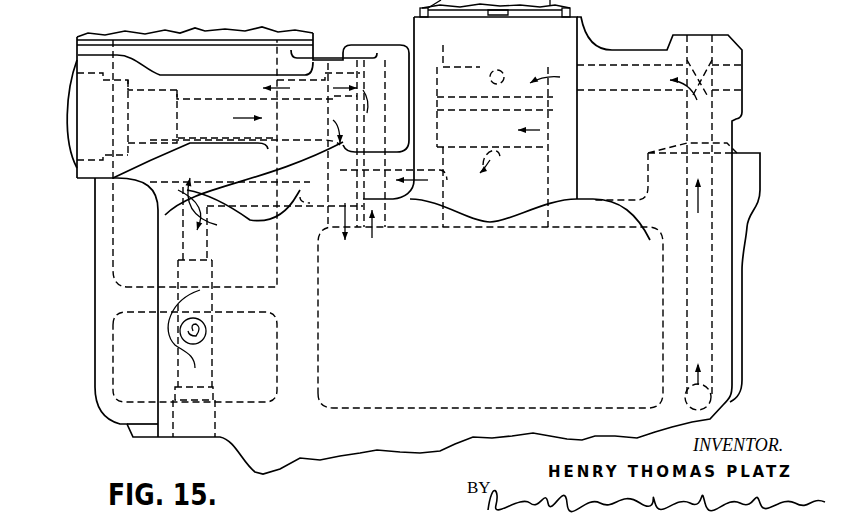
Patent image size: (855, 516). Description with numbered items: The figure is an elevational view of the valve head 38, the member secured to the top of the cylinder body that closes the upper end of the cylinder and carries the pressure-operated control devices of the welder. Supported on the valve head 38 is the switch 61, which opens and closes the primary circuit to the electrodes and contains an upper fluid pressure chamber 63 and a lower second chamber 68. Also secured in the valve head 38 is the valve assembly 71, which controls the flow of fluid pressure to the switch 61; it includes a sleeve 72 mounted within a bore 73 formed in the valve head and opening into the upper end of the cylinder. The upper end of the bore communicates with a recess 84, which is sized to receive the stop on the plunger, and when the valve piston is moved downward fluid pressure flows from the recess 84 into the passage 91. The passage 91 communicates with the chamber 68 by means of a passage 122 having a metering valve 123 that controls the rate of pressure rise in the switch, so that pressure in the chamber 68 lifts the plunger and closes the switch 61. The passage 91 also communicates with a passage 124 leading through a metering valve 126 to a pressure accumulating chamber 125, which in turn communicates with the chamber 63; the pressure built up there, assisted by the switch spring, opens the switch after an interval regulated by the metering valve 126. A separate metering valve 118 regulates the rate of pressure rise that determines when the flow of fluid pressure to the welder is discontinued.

The valve head 38 is at (93, 257).
The switch 61 is at (201, 62).
The fluid pressure chamber 63 is at (130, 200).
The second chamber 68 is at (133, 335).
The valve assembly 71 is at (553, 127).
The sleeve 72 is at (560, 180).
The bore 73 is at (553, 145).
The recess 84 is at (467, 67).
The passage 91 is at (307, 205).
The metering valve 118 is at (757, 192).
The passage 122 is at (210, 236).
The metering valve 123 is at (190, 286).
The passage 124 is at (205, 153).
The pressure accumulating chamber 125 is at (318, 307).
The metering valve 126 is at (222, 118).